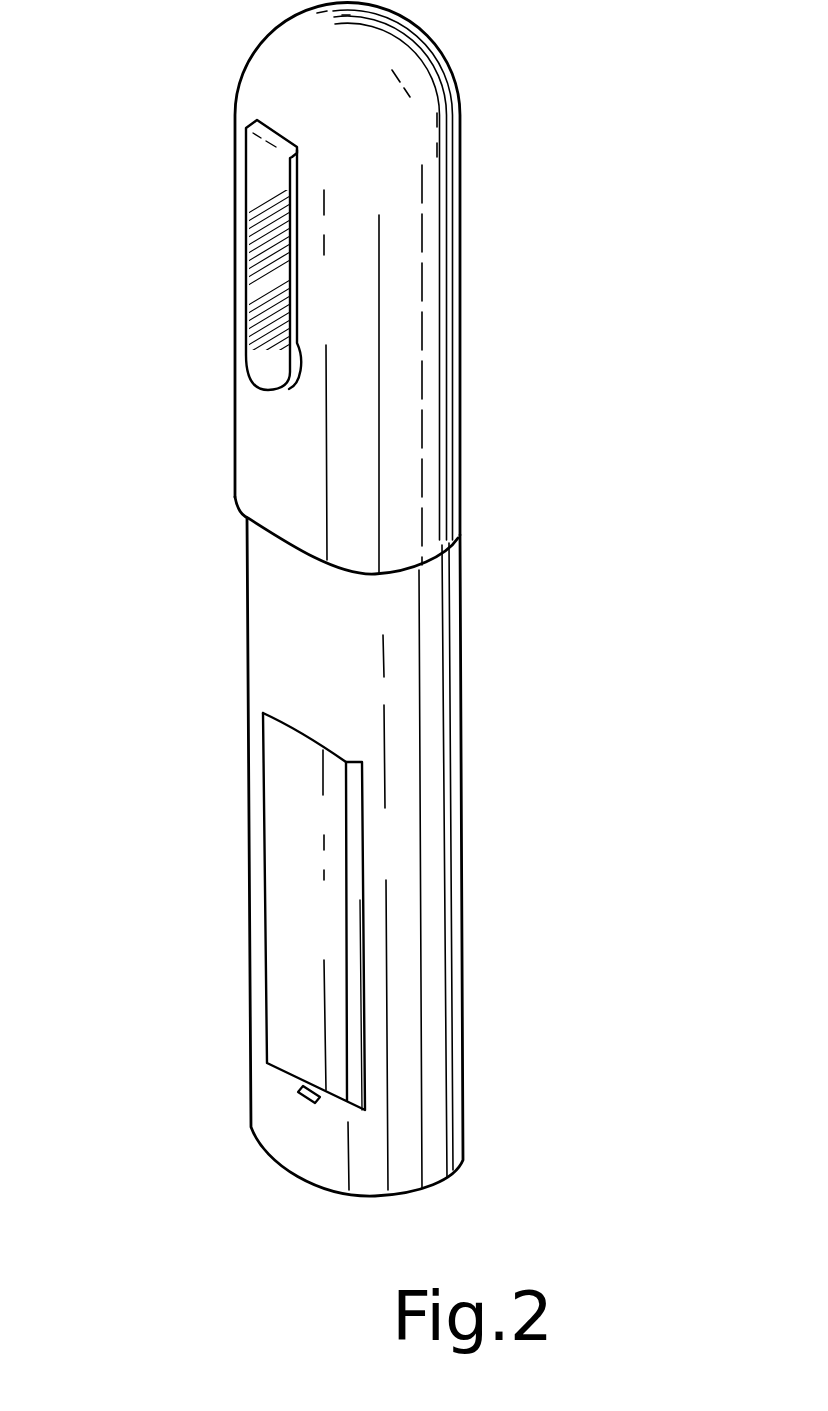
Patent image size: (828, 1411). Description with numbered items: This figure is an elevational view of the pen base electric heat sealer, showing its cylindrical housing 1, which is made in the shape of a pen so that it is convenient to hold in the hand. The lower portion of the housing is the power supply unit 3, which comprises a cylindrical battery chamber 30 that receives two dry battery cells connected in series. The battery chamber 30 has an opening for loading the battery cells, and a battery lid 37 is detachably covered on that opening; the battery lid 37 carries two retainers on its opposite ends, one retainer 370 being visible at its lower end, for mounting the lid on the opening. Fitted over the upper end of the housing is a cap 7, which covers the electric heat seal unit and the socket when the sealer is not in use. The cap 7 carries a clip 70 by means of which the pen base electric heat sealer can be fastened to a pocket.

The cylindrical housing 1 is at (527, 570).
The power supply unit 3 is at (462, 959).
The cap 7 is at (443, 155).
The clip 70 is at (258, 200).
The cylindrical battery chamber 30 is at (447, 687).
The battery lid 37 is at (358, 1085).
The retainer 370 is at (302, 1093).